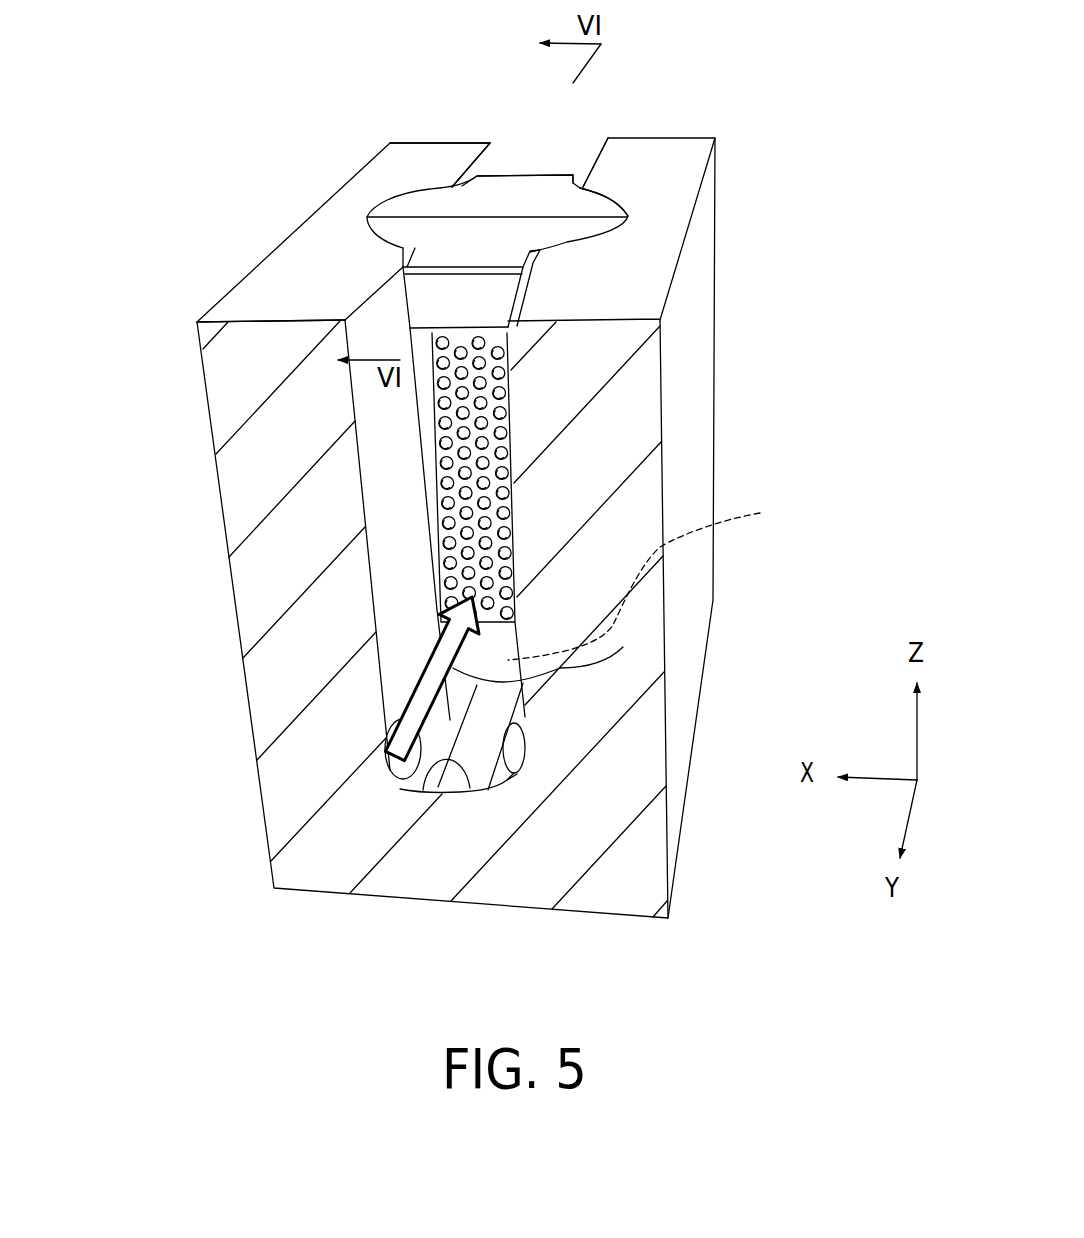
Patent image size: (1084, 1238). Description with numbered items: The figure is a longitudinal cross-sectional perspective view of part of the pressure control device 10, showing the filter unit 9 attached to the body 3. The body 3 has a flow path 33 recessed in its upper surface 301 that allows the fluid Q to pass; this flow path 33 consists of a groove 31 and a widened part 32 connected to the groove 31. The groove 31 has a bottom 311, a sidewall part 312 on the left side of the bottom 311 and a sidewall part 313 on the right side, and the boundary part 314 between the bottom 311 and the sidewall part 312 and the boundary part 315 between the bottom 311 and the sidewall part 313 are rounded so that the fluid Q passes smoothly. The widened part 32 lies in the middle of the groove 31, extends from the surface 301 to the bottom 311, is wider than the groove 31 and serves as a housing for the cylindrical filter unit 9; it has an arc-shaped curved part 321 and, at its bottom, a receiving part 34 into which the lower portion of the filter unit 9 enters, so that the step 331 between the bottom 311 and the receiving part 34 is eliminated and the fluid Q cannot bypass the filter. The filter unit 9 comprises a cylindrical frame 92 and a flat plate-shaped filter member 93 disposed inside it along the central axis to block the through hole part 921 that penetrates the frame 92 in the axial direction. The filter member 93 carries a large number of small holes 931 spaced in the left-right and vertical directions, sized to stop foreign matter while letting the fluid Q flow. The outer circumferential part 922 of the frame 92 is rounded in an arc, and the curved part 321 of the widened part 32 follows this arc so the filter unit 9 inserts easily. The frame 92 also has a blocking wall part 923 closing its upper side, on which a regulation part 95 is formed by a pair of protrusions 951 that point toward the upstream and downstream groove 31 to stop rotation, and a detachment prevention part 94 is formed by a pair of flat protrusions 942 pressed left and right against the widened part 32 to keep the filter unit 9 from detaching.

The body 3 is at (728, 165).
The pressure control device 10 is at (740, 133).
The upper surface 301 is at (408, 150).
The groove 31 is at (340, 305).
The widened part 32 is at (358, 234).
The flow path 33 is at (124, 245).
The receiving part 34 is at (652, 582).
The bottom 311 is at (422, 777).
The sidewall part 312 is at (403, 778).
The sidewall part 313 is at (517, 775).
The boundary part 314 is at (420, 777).
The boundary part 315 is at (498, 780).
The curved part 321 is at (453, 188).
The step 331 is at (623, 647).
The filter unit 9 is at (562, 166).
The frame 92 is at (485, 170).
The through hole part 921 is at (433, 528).
The outer circumferential part 922 is at (583, 188).
The blocking wall part 923 is at (592, 203).
The filter member 93 is at (428, 475).
The small holes 931 is at (437, 387).
The detachment prevention part 94 is at (511, 214).
The flat protrusions 942 is at (357, 215).
The regulation part 95 is at (567, 431).
The protrusions 951 is at (498, 188).
The fluid Q is at (425, 692).